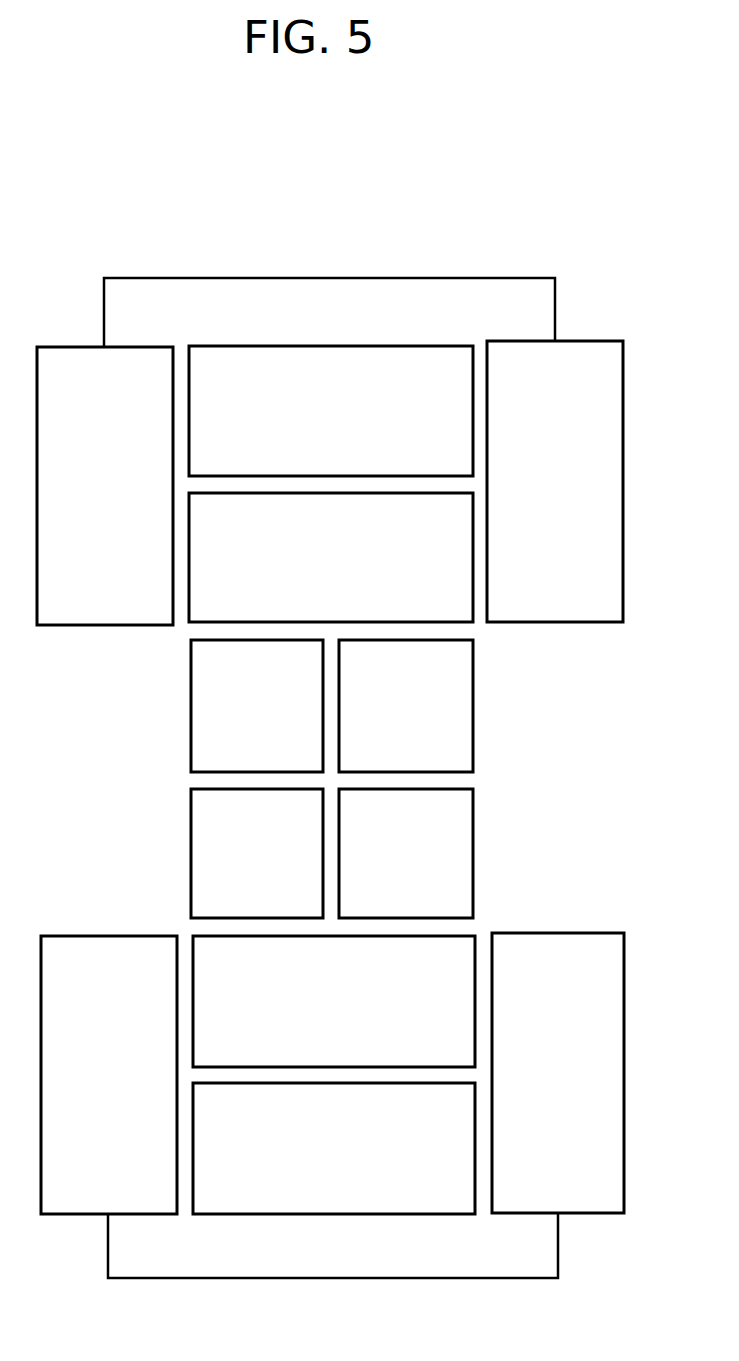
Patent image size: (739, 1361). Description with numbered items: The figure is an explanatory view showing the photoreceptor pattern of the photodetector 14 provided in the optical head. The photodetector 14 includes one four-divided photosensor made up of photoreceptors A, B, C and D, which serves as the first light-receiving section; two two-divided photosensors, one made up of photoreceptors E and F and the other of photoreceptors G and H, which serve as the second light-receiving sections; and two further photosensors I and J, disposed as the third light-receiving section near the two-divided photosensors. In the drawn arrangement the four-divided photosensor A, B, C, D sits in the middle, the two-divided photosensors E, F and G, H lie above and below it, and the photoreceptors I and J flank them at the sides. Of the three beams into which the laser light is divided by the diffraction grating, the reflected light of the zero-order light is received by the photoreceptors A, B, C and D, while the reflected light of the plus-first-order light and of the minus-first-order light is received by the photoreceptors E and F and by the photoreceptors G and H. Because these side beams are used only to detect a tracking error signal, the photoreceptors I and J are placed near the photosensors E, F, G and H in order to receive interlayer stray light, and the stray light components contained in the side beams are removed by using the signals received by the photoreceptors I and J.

The photodetector 14 is at (624, 140).
The photoreceptor A is at (257, 706).
The photoreceptor B is at (406, 706).
The photoreceptor C is at (406, 853).
The photoreceptor D is at (257, 853).
The photoreceptor E is at (331, 411).
The photoreceptor F is at (331, 557).
The photoreceptor G is at (334, 1001).
The photoreceptor H is at (334, 1148).
The photoreceptor I is at (330, 483).
The photoreceptor J is at (332, 1073).